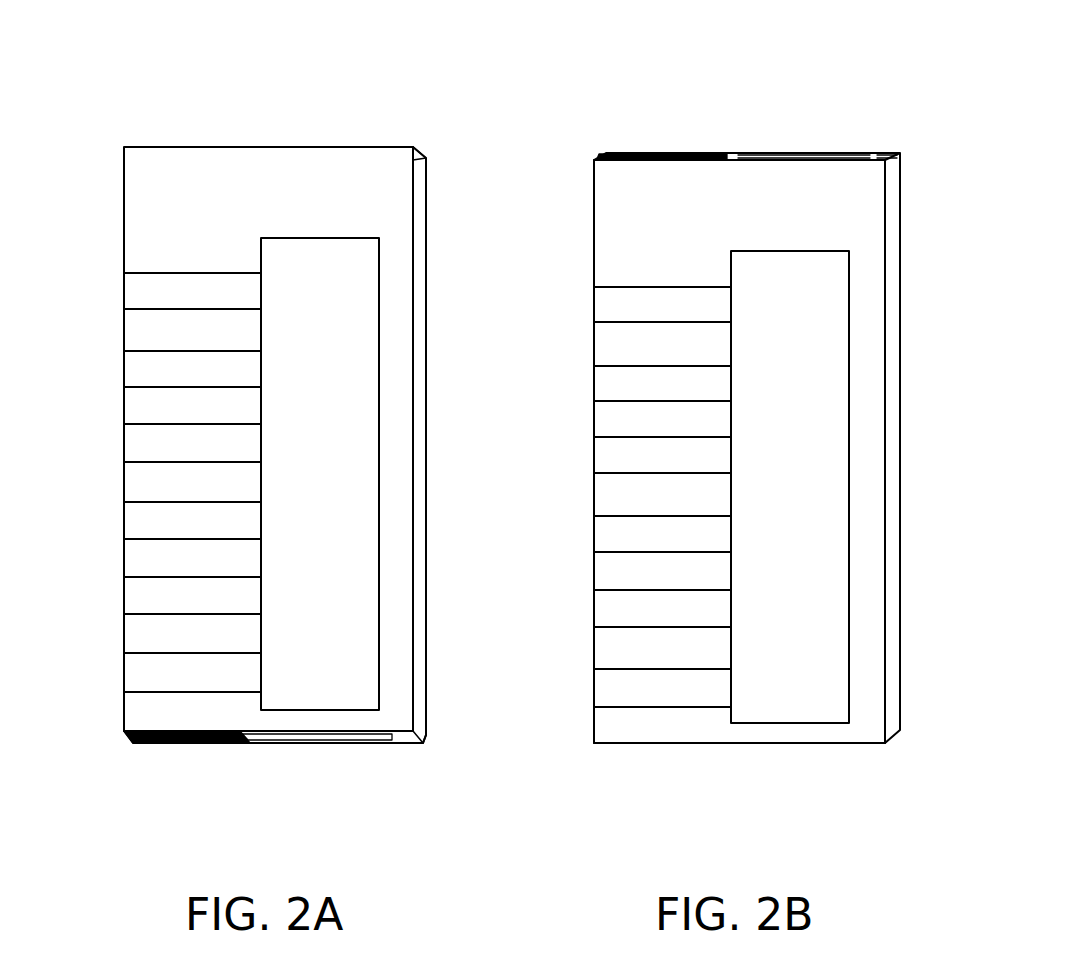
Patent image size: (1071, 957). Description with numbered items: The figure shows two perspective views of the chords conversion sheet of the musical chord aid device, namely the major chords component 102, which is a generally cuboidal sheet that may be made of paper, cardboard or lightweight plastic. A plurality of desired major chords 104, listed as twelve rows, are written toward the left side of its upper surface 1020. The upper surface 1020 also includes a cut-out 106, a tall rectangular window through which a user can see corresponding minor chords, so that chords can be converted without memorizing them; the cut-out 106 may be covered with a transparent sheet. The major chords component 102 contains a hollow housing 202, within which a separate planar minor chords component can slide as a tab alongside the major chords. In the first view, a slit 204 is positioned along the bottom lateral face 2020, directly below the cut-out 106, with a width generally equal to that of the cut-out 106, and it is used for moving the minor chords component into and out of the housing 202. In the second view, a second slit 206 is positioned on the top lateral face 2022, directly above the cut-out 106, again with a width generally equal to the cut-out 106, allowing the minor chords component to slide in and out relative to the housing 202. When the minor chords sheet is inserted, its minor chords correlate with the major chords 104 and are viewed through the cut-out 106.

In FIG. 2A, the major chords component 102 is at (123, 175).
In FIG. 2B, the major chords component 102 is at (594, 178).
In FIG. 2A, the major chords 104 is at (117, 702).
In FIG. 2B, the major chords 104 is at (580, 265).
In FIG. 2A, the cut-out 106 is at (320, 517).
In FIG. 2B, the cut-out 106 is at (810, 440).
In FIG. 2A, the upper surface 1020 is at (354, 200).
In FIG. 2A, the housing 202 is at (181, 743).
In FIG. 2B, the housing 202 is at (687, 745).
In FIG. 2A, the slit 204 is at (321, 743).
In FIG. 2A, the bottom lateral face 2020 is at (392, 743).
In FIG. 2B, the top lateral face 2022 is at (760, 153).
In FIG. 2B, the second slit 206 is at (838, 155).